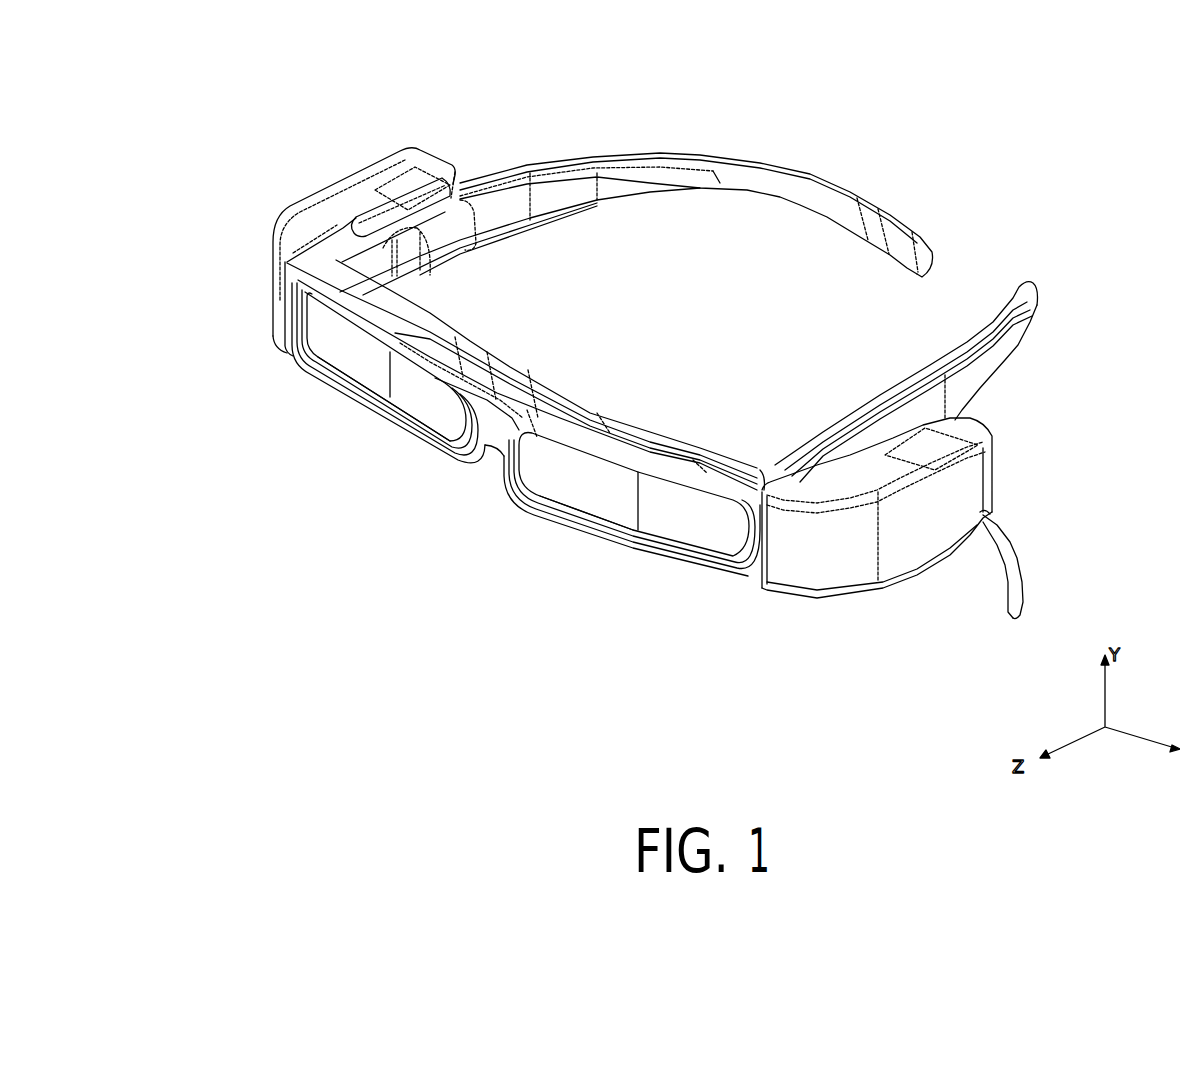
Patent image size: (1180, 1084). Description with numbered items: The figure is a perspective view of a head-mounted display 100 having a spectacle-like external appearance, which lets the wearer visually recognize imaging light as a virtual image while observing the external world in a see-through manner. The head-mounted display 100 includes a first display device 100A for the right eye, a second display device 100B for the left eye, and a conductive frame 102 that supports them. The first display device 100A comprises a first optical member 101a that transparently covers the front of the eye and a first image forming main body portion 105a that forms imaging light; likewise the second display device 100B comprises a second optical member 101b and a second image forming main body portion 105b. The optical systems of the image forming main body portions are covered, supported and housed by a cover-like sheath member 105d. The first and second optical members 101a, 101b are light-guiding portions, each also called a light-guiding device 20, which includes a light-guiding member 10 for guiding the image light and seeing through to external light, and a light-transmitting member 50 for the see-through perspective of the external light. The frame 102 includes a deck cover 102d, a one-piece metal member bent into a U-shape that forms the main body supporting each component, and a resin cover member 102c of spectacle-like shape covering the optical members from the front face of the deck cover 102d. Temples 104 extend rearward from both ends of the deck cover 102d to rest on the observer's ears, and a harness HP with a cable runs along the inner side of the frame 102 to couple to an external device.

The head-mounted display 100 is at (1027, 67).
The first display device 100A is at (305, 455).
The second display device 100B is at (639, 598).
The light-guiding member 10 is at (358, 357).
The light-guiding device 20 is at (528, 464).
The light-transmitting member 50 is at (408, 398).
The first optical member 101a is at (428, 410).
The second optical member 101b is at (703, 535).
The frame 102 is at (509, 370).
The cover member 102c is at (498, 425).
The deck cover 102d is at (548, 392).
The temples 104 is at (666, 150).
The first image forming main body portion 105a is at (381, 173).
The second image forming main body portion 105b is at (877, 464).
The sheath member 105d is at (301, 191).
The harness HP is at (1007, 578).